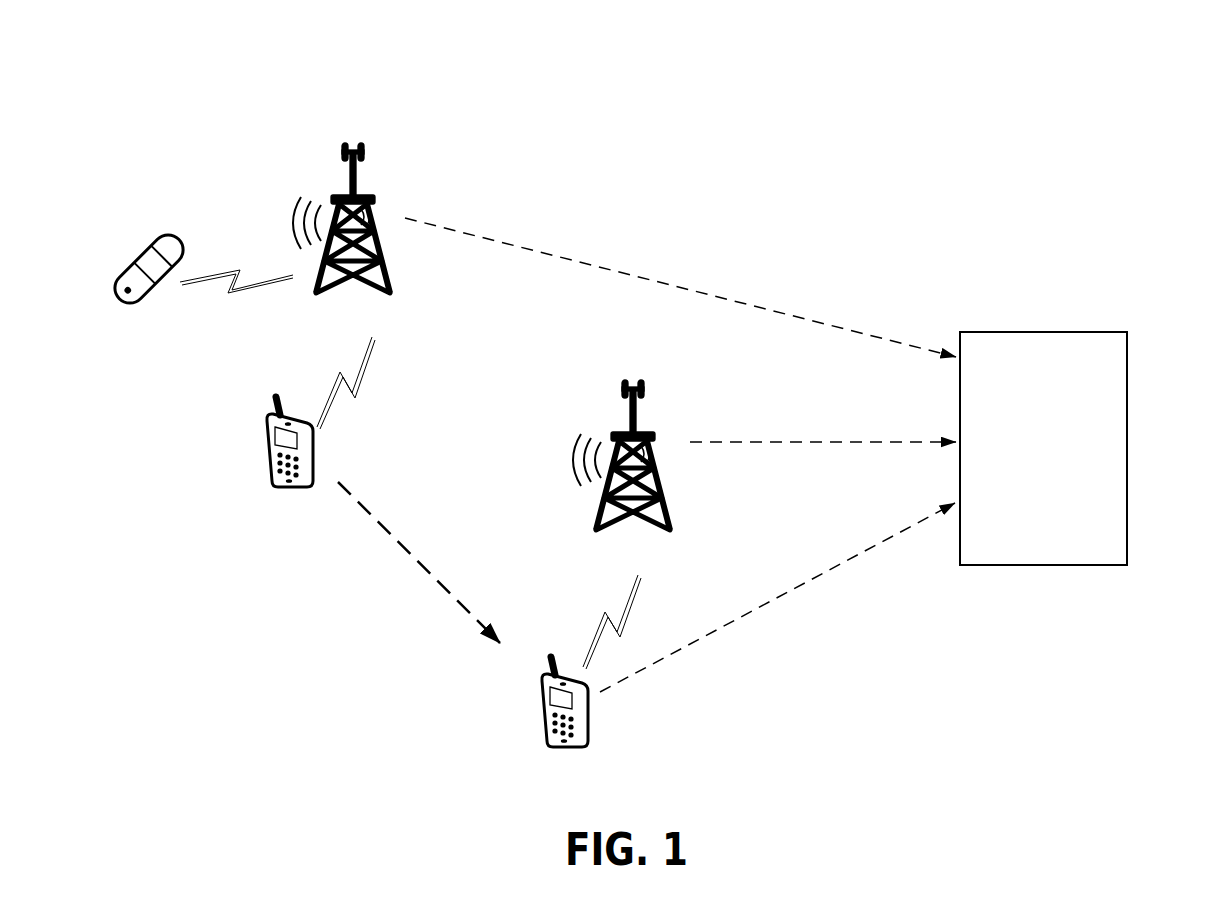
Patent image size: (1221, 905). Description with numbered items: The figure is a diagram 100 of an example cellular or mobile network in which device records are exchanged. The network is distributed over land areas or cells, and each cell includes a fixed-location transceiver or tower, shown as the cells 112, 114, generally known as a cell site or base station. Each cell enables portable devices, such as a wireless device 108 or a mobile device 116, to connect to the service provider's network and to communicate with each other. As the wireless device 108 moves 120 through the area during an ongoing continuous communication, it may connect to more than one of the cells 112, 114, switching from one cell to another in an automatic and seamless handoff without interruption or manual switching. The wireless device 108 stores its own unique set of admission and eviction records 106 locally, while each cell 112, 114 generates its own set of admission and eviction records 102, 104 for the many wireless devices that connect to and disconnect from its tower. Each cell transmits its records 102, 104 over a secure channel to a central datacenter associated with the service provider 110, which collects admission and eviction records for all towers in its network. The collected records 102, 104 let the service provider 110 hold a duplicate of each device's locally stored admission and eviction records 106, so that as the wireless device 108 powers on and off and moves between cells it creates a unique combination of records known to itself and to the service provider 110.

The diagram 100 is at (1056, 74).
The admission and eviction records 102 is at (737, 257).
The admission and eviction records 104 is at (767, 397).
The admission and eviction records 106 is at (816, 626).
The wireless device 108 is at (257, 416).
The service provider 110 is at (1045, 321).
The cell 112 is at (328, 144).
The cell 114 is at (627, 372).
The mobile device 116 is at (132, 272).
The movement 120 is at (363, 524).